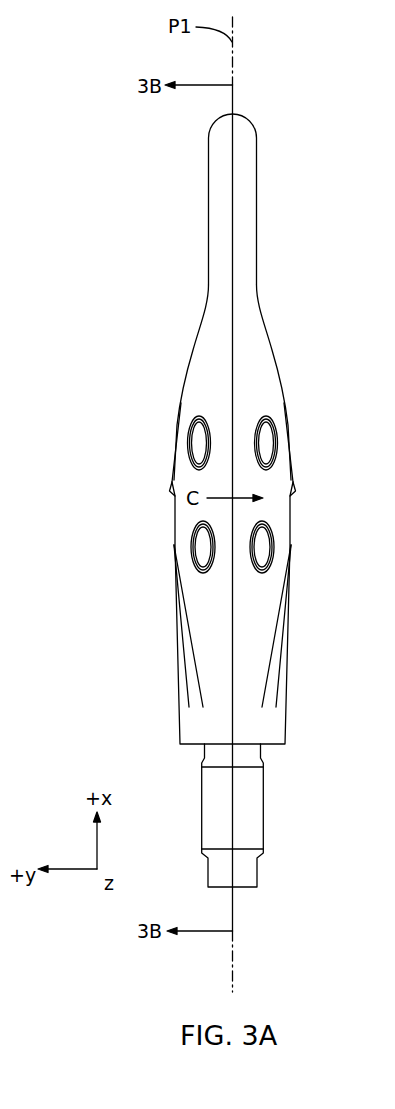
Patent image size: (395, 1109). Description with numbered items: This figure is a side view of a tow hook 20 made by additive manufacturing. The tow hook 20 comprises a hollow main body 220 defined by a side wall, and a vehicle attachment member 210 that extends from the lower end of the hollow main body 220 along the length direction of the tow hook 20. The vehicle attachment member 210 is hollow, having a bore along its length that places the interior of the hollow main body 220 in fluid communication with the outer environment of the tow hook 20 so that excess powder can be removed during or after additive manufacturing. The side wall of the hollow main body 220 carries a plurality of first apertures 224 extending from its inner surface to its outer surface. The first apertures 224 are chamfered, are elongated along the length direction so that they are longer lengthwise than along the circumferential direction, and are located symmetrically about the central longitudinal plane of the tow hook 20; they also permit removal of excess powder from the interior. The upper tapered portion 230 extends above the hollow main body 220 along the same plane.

The tow hook 20 is at (280, 80).
The elongate shaft 230 is at (195, 206).
The hollow main body 220 is at (161, 511).
The first apertures 224 is at (199, 445).
The vehicle attachment member 210 is at (192, 793).